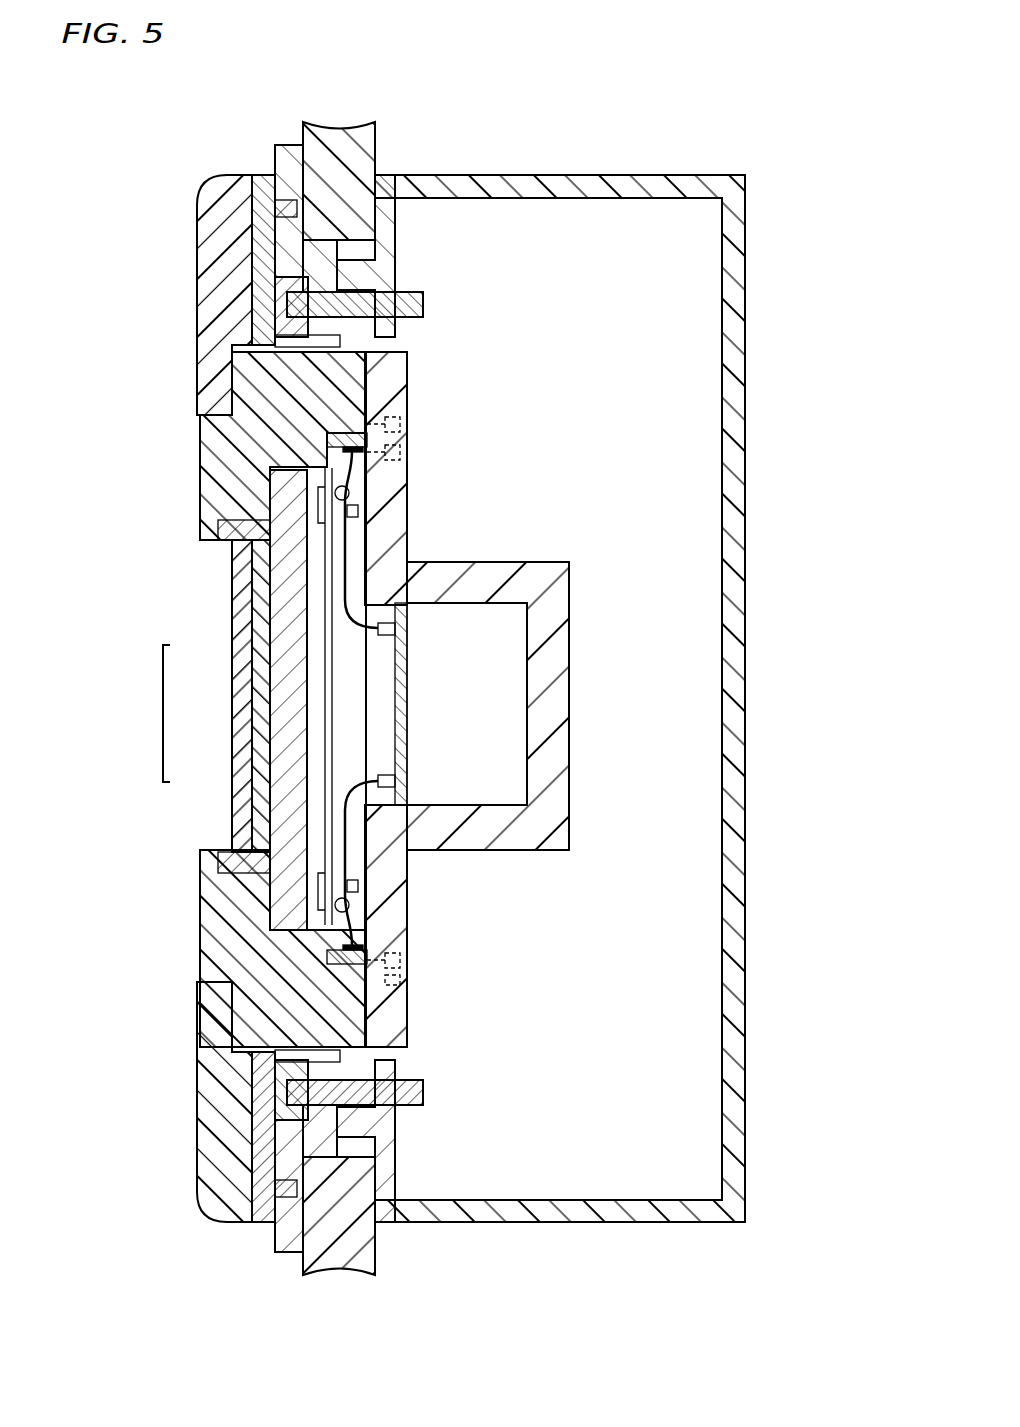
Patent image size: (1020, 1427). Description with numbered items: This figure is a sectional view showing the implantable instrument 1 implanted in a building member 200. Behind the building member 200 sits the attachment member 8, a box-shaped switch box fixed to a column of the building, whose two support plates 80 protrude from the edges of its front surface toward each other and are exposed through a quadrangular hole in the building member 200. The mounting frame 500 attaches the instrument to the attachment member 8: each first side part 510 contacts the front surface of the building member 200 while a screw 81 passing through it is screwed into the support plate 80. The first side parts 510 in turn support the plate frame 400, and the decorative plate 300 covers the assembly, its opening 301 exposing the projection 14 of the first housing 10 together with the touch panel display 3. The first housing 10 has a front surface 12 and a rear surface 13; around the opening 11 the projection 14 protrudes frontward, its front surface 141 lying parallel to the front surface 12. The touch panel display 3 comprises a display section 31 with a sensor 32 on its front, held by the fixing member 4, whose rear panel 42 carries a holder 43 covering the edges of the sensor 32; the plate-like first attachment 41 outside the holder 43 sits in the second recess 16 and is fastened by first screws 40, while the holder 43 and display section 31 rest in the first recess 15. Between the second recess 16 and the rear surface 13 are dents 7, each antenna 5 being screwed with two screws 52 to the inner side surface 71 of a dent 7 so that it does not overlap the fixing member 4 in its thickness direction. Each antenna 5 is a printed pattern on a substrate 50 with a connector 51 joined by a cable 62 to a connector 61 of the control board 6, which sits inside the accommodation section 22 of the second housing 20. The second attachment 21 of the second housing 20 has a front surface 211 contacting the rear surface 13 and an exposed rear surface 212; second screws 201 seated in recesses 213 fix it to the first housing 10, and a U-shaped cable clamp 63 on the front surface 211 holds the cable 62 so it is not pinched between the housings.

The implantable instrument 1 is at (175, 290).
The touch panel display 3 is at (154, 713).
The fixing member 4 is at (280, 680).
The antenna 5 is at (325, 460).
The control board 6 is at (406, 750).
The dent 7 is at (330, 440).
The attachment member 8 is at (748, 297).
The first housing 10 is at (250, 375).
The opening 11 is at (215, 848).
The front surface 12 is at (250, 370).
The rear surface 13 is at (408, 378).
The projection 14 is at (195, 456).
The first recess 15 is at (232, 515).
The second recess 16 is at (232, 460).
The second housing 20 is at (572, 640).
The second attachment 21 is at (395, 375).
The accommodation section 22 is at (447, 606).
The display section 31 is at (245, 752).
The sensor 32 is at (260, 710).
The first screw 40 is at (326, 500).
The first attachment 41 is at (215, 527).
The rear panel 42 is at (308, 690).
The holder 43 is at (225, 533).
The substrate 50 is at (367, 718).
The connector 51 is at (360, 450).
The screw 52 is at (360, 508).
The connector 61 is at (386, 636).
The cable 62 is at (346, 620).
The cable clamp 63 is at (350, 495).
The inner side surface 71 is at (235, 395).
The support plate 80 is at (385, 262).
The screw 81 is at (410, 302).
The front surface 141 is at (200, 495).
The building member 200 is at (340, 140).
The second screw 201 is at (402, 425).
The front surface 211 is at (346, 553).
The rear surface 212 is at (401, 410).
The recess 213 is at (401, 450).
The decorative plate 300 is at (225, 245).
The opening 301 is at (325, 445).
The plate frame 400 is at (275, 210).
The mounting frame 500 is at (272, 148).
The first side part 510 is at (288, 160).